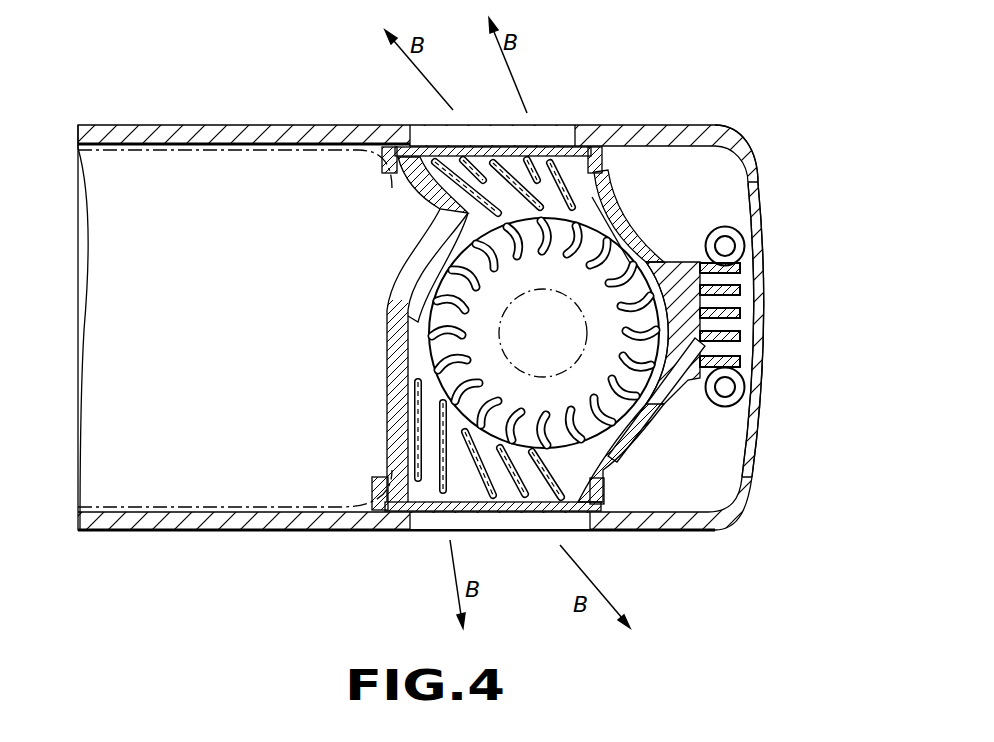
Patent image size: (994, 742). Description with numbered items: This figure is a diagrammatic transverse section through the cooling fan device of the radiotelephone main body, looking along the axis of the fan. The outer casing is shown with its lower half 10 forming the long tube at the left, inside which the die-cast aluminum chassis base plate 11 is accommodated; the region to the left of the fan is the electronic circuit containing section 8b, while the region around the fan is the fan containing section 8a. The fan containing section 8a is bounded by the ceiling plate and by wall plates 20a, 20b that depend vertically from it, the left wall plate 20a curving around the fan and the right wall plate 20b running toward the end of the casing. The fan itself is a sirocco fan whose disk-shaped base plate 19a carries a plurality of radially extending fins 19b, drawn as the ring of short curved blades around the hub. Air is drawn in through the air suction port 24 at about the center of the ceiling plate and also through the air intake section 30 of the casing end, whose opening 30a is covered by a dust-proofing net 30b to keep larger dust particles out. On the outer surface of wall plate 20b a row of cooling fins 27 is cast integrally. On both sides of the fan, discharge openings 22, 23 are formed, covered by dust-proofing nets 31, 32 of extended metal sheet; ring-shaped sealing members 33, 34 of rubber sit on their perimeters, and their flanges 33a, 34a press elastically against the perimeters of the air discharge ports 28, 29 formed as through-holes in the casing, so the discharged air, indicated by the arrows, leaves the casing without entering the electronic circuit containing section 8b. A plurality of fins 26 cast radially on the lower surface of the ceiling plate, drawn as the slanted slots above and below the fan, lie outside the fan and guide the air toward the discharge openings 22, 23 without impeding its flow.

The fan containing section 8a is at (618, 432).
The electronic circuit containing section 8b is at (283, 526).
The lower half 10 is at (242, 522).
The chassis base plate 11 is at (172, 530).
The disk-shaped base plate 19a is at (636, 240).
The fins 19b is at (628, 392).
The wall plate 20a is at (388, 352).
The wall plate 20b is at (606, 198).
The discharge opening 22 is at (425, 156).
The discharge opening 23 is at (408, 512).
The air suction port 24 is at (503, 312).
The fins 26 is at (497, 160).
The cooling fins 27 is at (748, 340).
The air discharge port 28 is at (392, 147).
The air discharge port 29 is at (382, 512).
The air intake section 30 is at (772, 295).
The opening 30a is at (757, 178).
The dust-proofing net 30b is at (768, 222).
The dust-proofing net 31 is at (534, 147).
The dust-proofing net 32 is at (470, 512).
The ring-shaped sealing member 33 is at (615, 150).
The flange 33a is at (598, 147).
The ring-shaped sealing member 34 is at (695, 528).
The flange 34a is at (600, 512).